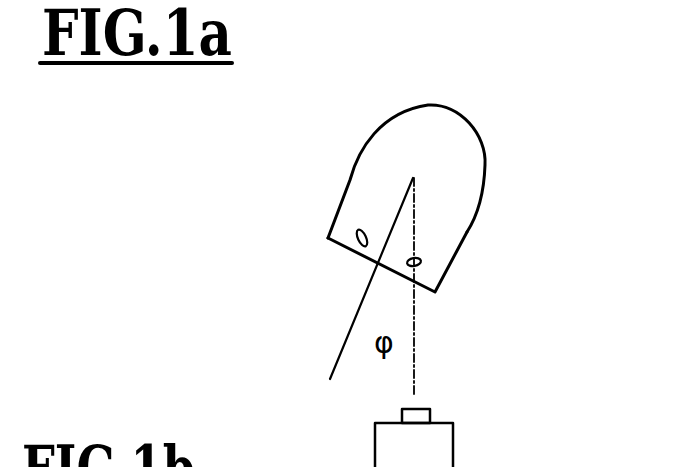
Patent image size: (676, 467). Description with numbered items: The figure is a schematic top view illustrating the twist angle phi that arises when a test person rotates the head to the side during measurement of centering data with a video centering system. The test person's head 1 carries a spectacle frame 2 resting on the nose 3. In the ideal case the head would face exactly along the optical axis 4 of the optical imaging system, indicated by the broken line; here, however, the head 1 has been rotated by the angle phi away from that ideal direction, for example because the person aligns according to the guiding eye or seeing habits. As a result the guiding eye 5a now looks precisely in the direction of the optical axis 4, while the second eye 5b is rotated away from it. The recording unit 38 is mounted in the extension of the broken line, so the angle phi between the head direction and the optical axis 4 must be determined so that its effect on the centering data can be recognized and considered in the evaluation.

The head 1 is at (467, 168).
The spectacle frame 2 is at (444, 275).
The nose 3 is at (372, 282).
The optical axis 4 is at (417, 380).
The guiding eye 5a is at (417, 259).
The second eye 5b is at (362, 236).
The recording unit 38 is at (442, 453).